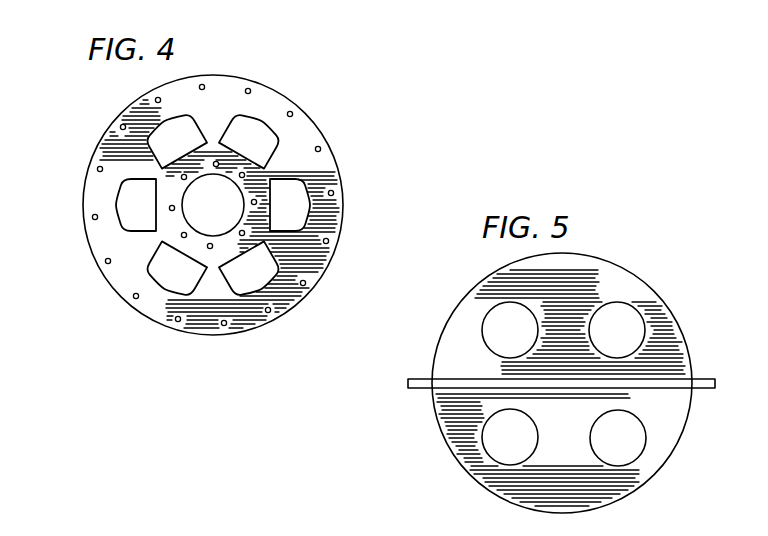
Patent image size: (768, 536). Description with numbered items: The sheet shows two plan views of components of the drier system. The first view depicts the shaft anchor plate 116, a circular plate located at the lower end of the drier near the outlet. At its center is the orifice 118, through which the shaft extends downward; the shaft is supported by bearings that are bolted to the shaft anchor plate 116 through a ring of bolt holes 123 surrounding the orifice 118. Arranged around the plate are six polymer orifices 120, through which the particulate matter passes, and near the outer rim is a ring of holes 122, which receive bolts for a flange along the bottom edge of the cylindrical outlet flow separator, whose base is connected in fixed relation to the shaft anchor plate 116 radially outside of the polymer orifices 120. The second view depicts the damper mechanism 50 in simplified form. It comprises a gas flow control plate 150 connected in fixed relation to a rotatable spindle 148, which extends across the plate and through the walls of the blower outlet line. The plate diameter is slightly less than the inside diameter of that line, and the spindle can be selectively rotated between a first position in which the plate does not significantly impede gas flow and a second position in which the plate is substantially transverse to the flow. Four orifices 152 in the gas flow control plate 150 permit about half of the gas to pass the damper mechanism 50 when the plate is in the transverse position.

In FIG. 4, the shaft anchor plate 116 is at (110, 126).
In FIG. 4, the orifice 118 is at (232, 212).
In FIG. 4, the polymer orifices 120 is at (162, 134).
In FIG. 4, the holes 122 is at (133, 296).
In FIG. 4, the bolt holes 123 is at (243, 172).
In FIG. 5, the gas flow control plate 150 is at (628, 279).
In FIG. 5, the rotatable spindle 148 is at (702, 378).
In FIG. 5, the orifices 152 is at (497, 310).
In FIG. 5, the damper mechanism 50 is at (519, 374).